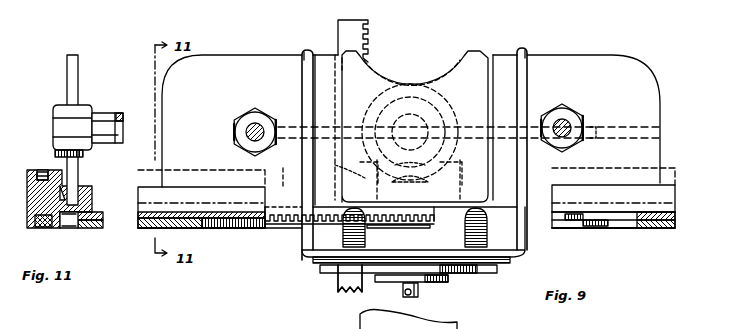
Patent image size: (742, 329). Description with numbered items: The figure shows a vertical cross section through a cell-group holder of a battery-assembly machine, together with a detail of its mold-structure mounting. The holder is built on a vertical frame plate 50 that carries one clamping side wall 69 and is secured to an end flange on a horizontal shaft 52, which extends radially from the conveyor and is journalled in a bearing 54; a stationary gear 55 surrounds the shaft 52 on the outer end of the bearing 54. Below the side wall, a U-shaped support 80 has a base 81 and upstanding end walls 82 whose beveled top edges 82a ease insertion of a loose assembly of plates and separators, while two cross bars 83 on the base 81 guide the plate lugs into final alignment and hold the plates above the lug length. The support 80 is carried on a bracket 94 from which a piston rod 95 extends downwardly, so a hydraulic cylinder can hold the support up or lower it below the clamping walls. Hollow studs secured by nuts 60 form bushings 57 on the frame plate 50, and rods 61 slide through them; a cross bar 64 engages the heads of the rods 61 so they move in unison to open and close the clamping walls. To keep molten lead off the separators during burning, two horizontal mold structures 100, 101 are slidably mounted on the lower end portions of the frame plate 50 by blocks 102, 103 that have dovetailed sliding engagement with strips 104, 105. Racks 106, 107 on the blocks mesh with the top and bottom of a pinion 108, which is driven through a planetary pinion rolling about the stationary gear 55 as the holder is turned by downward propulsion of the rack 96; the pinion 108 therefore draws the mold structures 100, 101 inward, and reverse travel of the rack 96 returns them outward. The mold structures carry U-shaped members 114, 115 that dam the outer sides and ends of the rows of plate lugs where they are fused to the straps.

In FIG. 9, the vertical frame plate 50 is at (610, 52).
In FIG. 11, the vertical frame plate 50 is at (68, 60).
In FIG. 9, the horizontal shaft 52 is at (412, 88).
In FIG. 9, the bearing 54 is at (432, 320).
In FIG. 9, the stationary gear 55 is at (450, 110).
In FIG. 9, the bushing 57 is at (248, 112).
In FIG. 11, the bushing 57 is at (92, 105).
In FIG. 11, the nut 60 is at (55, 143).
In FIG. 9, the rod 61 is at (245, 128).
In FIG. 11, the rod 61 is at (118, 112).
In FIG. 9, the cross bar 64 is at (598, 129).
In FIG. 9, the side wall 69 is at (479, 50).
In FIG. 9, the U-shaped support 80 is at (321, 276).
In FIG. 9, the base 81 is at (504, 252).
In FIG. 9, the end wall 82 is at (303, 62).
In FIG. 9, the beveled top edge 82a is at (304, 52).
In FIG. 9, the cross bar 83 is at (366, 242).
In FIG. 9, the bracket 94 is at (351, 278).
In FIG. 9, the piston rod 95 is at (421, 292).
In FIG. 9, the rack 96 is at (340, 38).
In FIG. 9, the mold structure 100 is at (200, 228).
In FIG. 11, the mold structure 100 is at (103, 212).
In FIG. 9, the mold structure 101 is at (676, 216).
In FIG. 9, the block 102 is at (145, 179).
In FIG. 11, the block 102 is at (32, 166).
In FIG. 9, the block 103 is at (684, 185).
In FIG. 9, the dovetailed strip 104 is at (283, 180).
In FIG. 11, the dovetailed strip 104 is at (66, 229).
In FIG. 9, the dovetailed strip 105 is at (458, 182).
In FIG. 9, the rack 106 is at (283, 230).
In FIG. 11, the rack 106 is at (44, 228).
In FIG. 9, the rack 107 is at (352, 165).
In FIG. 11, the rack 107 is at (44, 174).
In FIG. 9, the pinion 108 is at (412, 222).
In FIG. 9, the U-shaped member 114 is at (198, 230).
In FIG. 11, the U-shaped member 114 is at (95, 230).
In FIG. 9, the U-shaped member 115 is at (676, 228).